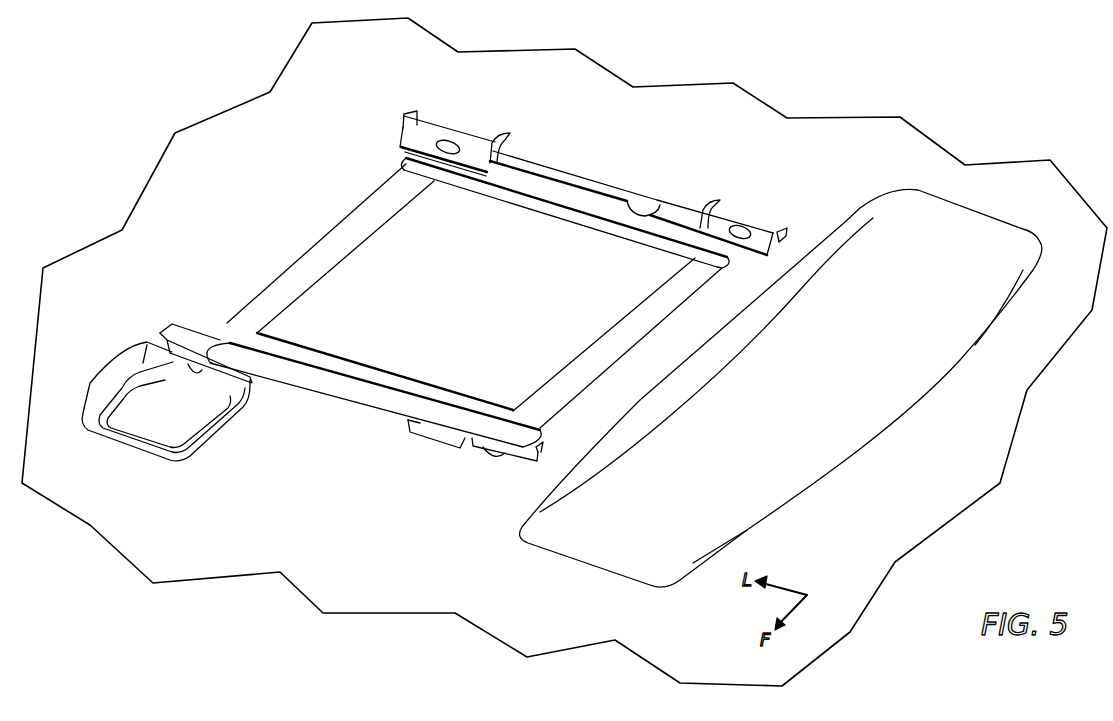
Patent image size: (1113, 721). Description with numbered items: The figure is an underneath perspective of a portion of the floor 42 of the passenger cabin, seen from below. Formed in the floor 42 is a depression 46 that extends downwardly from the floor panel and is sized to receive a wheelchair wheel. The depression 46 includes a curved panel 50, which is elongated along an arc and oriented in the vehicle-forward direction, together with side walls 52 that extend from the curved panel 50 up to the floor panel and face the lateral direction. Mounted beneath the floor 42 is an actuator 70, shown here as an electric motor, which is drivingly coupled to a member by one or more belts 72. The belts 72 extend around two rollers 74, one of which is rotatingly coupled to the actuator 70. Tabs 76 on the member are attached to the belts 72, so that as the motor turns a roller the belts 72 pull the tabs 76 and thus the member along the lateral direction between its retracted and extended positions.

The floor 42 is at (708, 150).
The depression 46 is at (987, 213).
The curved panel 50 is at (793, 432).
The side wall 52 is at (720, 382).
The actuator 70 is at (213, 437).
The belt 72 is at (543, 220).
The roller 74 is at (358, 247).
The tab 76 is at (623, 197).